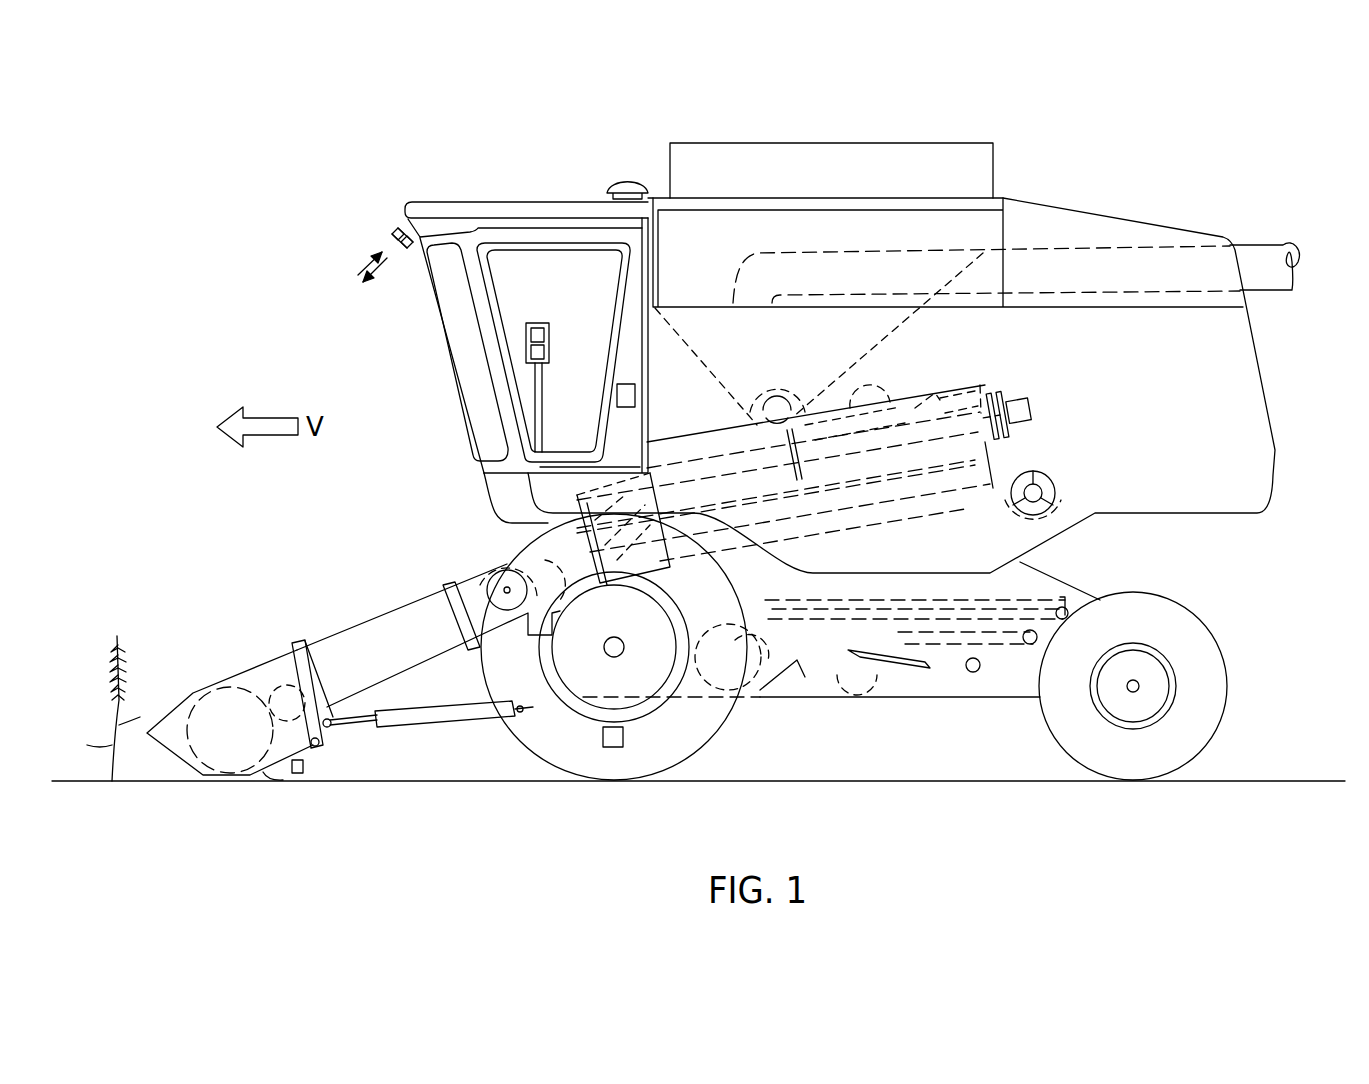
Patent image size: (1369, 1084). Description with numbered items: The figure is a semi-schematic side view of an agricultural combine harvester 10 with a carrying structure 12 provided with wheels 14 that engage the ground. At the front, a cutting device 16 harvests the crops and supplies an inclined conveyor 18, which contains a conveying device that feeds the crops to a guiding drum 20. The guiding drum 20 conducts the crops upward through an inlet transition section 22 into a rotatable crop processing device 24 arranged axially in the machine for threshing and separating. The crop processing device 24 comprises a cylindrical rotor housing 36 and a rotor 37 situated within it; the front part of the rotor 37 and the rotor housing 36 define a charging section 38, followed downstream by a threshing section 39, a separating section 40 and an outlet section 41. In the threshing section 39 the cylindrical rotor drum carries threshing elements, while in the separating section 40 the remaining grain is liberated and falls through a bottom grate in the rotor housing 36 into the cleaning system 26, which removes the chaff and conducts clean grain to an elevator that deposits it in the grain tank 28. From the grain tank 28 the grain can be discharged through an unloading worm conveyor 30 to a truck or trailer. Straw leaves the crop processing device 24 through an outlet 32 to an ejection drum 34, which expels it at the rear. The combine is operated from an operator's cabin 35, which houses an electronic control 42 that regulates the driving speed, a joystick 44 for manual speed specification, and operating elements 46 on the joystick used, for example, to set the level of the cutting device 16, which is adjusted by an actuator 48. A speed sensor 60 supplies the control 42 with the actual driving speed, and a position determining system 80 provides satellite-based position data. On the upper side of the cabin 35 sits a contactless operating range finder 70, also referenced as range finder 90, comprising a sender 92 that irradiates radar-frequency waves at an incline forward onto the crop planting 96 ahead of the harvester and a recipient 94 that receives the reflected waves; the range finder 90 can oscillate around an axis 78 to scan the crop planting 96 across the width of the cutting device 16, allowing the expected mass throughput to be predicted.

The agricultural combine harvester 10 is at (1076, 148).
The carrying structure 12 is at (918, 683).
The wheels 14 is at (715, 745).
The cutting device 16 is at (230, 688).
The inclined conveyor 18 is at (388, 632).
The guiding drum 20 is at (520, 547).
The inlet transition section 22 is at (678, 570).
The crop processing device 24 is at (716, 445).
The cleaning system 26 is at (810, 622).
The grain tank 28 is at (683, 264).
The unloading worm conveyor 30 is at (1092, 281).
The outlet 32 is at (1020, 437).
The ejection drum 34 is at (1052, 470).
The operator's cabin 35 is at (586, 325).
The rotor housing 36 is at (877, 417).
The rotor 37 is at (930, 423).
The charging section 38 is at (570, 467).
The threshing section 39 is at (746, 441).
The separating section 40 is at (948, 378).
The outlet section 41 is at (985, 363).
The electronic control 42 is at (617, 398).
The joystick 44 is at (543, 380).
The operating elements 46 is at (552, 316).
The actuator 48 is at (429, 720).
The speed sensor 60 is at (615, 747).
The contactless operating range finder 70 is at (387, 280).
The axis 78 is at (394, 230).
The position determining system 80 is at (628, 180).
The range finder 90 is at (398, 228).
The sender 92 is at (392, 234).
The recipient 94 is at (398, 249).
The crop planting 96 is at (110, 718).